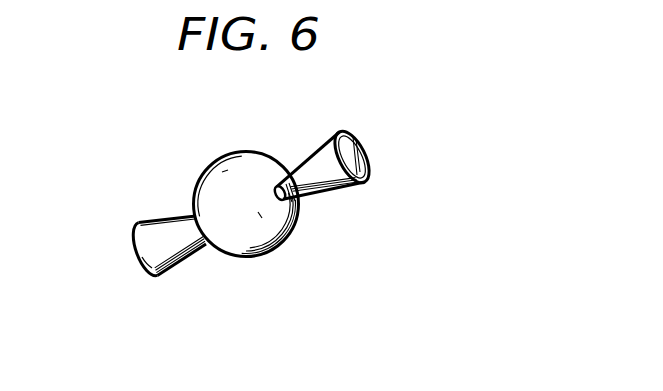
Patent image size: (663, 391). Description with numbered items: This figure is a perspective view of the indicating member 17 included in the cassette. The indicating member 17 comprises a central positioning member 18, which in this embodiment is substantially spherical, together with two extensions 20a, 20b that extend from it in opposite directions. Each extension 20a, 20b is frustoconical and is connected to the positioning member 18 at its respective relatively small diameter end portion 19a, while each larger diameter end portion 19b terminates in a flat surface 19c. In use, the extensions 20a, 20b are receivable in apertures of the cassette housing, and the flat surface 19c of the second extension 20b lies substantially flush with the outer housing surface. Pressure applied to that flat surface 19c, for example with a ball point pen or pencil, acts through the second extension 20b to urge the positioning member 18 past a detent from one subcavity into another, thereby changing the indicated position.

The indicating member 17 is at (261, 195).
The central positioning member 18 is at (298, 225).
The relatively small diameter end portion 19a is at (302, 207).
The larger diameter end portion 19b is at (342, 188).
The flat surface 19c is at (368, 153).
The first extension 20a is at (396, 171).
The second extension 20b is at (152, 257).